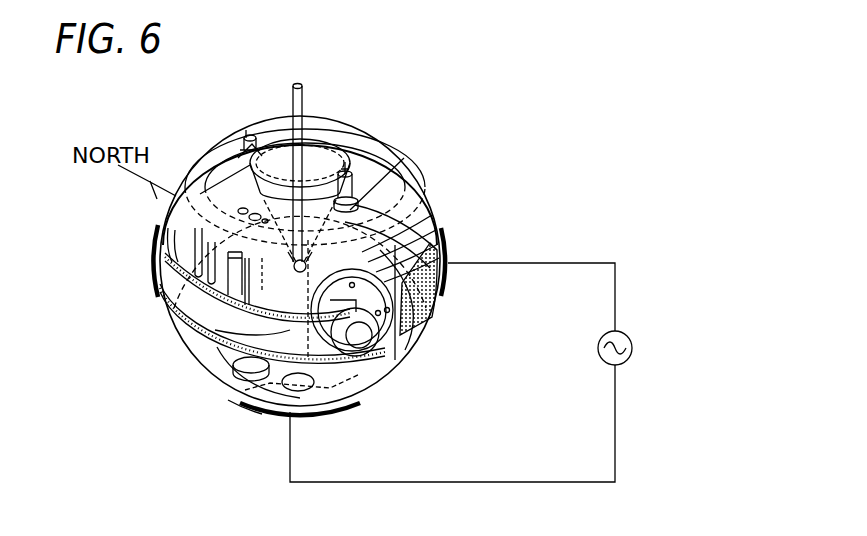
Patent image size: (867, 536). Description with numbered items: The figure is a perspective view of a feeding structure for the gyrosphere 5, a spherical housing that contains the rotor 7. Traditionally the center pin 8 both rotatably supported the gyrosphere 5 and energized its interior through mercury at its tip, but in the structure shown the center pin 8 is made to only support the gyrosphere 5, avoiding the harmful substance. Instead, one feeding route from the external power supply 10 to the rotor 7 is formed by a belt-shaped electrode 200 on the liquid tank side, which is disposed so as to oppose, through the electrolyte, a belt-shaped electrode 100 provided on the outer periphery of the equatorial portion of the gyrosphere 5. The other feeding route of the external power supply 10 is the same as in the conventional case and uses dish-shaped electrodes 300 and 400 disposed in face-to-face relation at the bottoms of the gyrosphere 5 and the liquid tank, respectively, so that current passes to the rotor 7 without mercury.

The gyrosphere 5 is at (411, 191).
The rotor 7 is at (412, 248).
The center pin 8 is at (305, 101).
The external power supply 10 is at (623, 336).
The belt-shaped electrode 100 is at (350, 313).
The belt-shaped electrode 200 is at (148, 239).
The dish-shaped electrode 300 is at (335, 415).
The dish-shaped electrode 400 is at (268, 425).